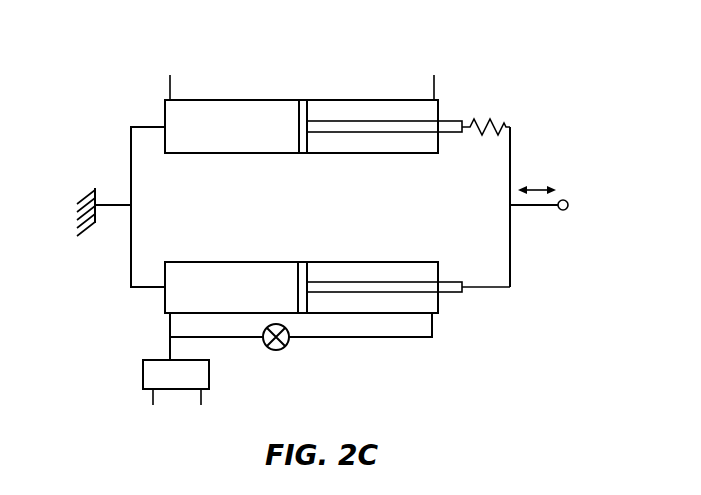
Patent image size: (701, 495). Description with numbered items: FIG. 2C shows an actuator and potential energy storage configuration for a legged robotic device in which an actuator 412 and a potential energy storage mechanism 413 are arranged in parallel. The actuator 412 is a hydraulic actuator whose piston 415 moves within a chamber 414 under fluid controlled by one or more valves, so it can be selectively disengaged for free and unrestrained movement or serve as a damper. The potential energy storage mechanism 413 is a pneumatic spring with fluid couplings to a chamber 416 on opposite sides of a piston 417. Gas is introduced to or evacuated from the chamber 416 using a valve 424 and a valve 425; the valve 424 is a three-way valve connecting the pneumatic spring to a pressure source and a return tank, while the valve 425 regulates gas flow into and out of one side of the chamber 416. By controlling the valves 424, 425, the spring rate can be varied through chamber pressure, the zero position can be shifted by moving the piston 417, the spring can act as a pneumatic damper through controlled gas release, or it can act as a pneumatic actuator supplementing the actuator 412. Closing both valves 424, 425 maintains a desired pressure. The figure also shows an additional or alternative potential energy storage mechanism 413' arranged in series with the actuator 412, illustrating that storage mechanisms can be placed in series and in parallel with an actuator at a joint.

The actuator 412 is at (294, 68).
The potential energy storage mechanism 413 is at (377, 228).
The potential energy storage mechanism 413' is at (516, 98).
The chamber 414 is at (234, 123).
The piston 415 is at (298, 118).
The chamber 416 is at (205, 280).
The piston 417 is at (297, 278).
The valve 424 is at (209, 375).
The valve 425 is at (285, 347).